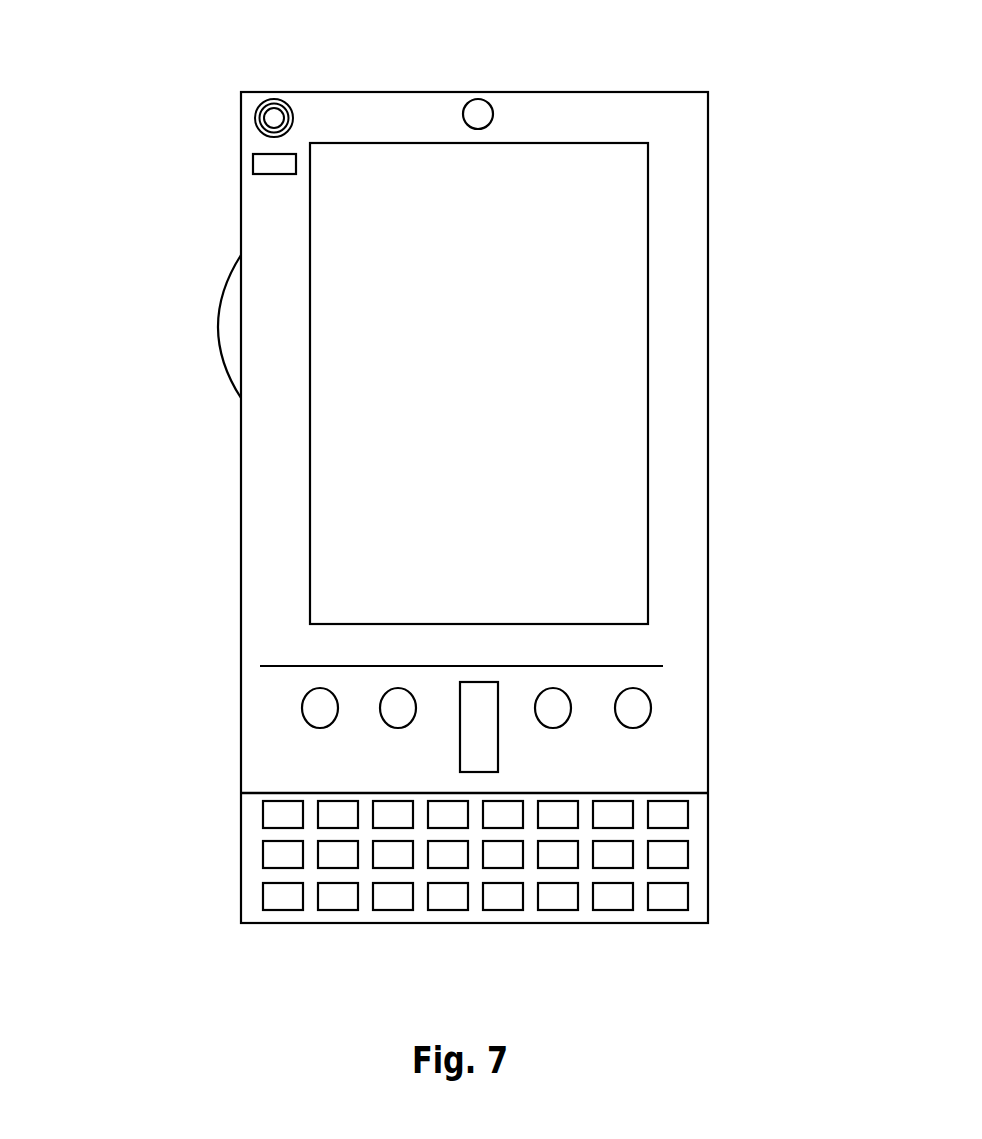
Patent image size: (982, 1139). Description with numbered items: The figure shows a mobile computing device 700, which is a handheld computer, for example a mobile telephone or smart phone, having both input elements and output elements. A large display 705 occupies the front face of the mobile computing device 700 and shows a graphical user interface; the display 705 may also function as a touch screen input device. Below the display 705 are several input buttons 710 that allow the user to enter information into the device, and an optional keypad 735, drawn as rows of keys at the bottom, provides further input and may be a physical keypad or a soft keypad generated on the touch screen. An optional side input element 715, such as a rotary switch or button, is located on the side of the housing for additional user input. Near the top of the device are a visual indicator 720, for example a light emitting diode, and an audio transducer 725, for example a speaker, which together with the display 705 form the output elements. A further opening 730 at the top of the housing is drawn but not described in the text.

The mobile computing device 700 is at (697, 110).
The display 705 is at (414, 543).
The input buttons 710 is at (478, 733).
The side input element 715 is at (231, 327).
The visual indicator 720 is at (254, 168).
The audio transducer 725 is at (255, 118).
The speaker 730 is at (490, 110).
The keypad 735 is at (250, 902).